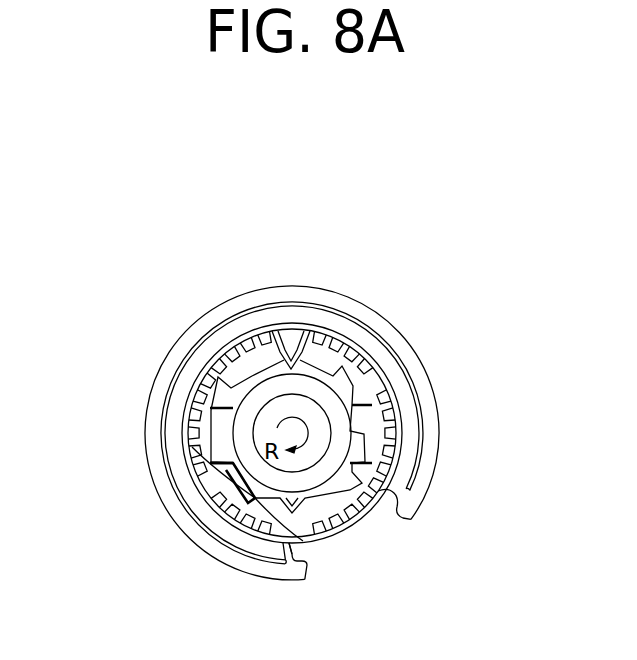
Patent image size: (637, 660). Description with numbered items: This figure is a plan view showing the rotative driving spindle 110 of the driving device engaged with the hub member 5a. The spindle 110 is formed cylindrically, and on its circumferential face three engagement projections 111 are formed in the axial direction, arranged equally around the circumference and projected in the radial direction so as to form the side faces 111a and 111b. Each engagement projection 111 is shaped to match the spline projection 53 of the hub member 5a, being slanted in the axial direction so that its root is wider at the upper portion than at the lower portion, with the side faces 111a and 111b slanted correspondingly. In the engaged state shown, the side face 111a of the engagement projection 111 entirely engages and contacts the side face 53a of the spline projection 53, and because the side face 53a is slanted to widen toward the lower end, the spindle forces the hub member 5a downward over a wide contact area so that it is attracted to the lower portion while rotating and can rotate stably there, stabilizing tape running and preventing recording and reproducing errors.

The hub member 5a is at (339, 273).
The spline projection 53 is at (292, 353).
The side face of spline projection 53a is at (222, 473).
The rotative driving spindle 110 is at (321, 384).
The engagement projection 111 is at (252, 488).
The side face of engagement projection 111a is at (217, 446).
The side face of engagement projection 111b is at (303, 540).